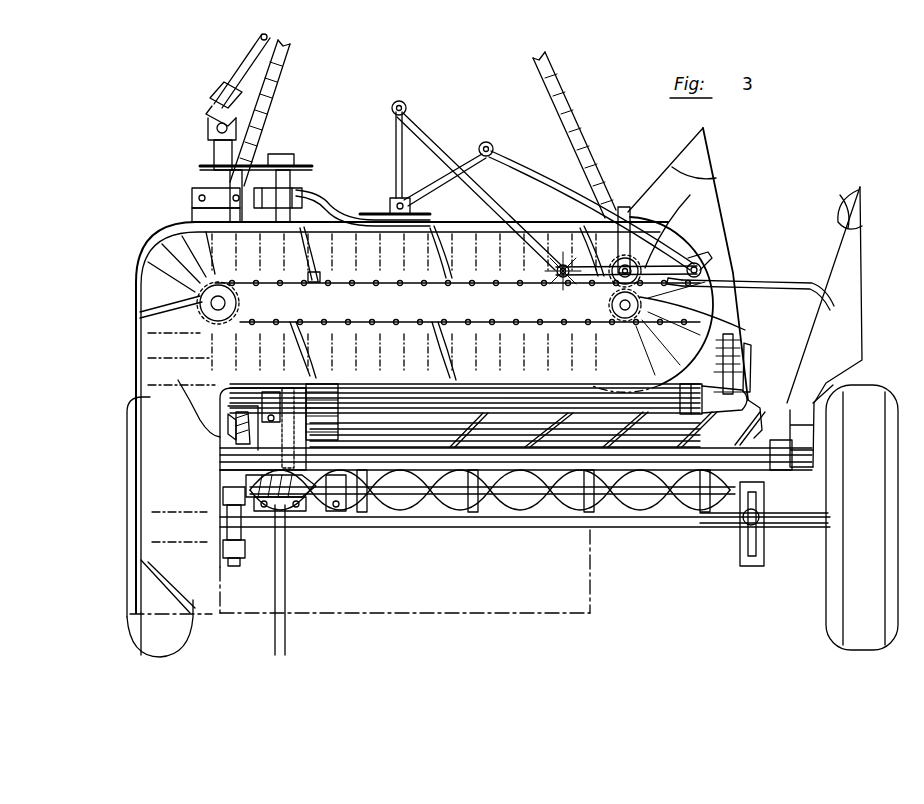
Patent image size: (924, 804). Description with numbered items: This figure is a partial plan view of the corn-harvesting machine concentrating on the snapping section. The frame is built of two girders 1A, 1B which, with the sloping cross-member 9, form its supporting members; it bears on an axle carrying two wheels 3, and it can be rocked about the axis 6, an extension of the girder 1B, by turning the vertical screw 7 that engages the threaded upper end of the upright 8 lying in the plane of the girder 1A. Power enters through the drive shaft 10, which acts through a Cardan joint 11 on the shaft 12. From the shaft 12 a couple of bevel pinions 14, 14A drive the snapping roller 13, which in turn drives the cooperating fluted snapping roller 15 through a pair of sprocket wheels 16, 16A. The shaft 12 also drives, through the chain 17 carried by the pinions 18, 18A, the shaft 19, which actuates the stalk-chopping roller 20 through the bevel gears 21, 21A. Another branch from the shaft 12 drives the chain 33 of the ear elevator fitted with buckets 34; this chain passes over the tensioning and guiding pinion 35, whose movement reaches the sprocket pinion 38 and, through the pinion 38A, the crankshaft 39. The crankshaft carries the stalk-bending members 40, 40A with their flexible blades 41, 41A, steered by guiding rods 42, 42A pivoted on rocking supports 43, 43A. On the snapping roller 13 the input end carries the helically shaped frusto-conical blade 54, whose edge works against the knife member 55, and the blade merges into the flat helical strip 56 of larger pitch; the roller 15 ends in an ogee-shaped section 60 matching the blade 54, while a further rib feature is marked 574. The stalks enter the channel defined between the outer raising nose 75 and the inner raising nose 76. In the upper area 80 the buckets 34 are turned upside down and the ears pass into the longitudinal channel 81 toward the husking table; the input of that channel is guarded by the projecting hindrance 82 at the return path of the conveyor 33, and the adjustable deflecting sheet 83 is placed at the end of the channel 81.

The girder 1A is at (586, 144).
The girder 1B is at (280, 80).
The wheels 3 is at (186, 634).
The axis 6 is at (232, 524).
The vertical screw 7 is at (742, 522).
The upright 8 is at (742, 557).
The sloping cross-member 9 is at (472, 460).
The drive shaft 10 is at (246, 52).
The Cardan joint 11 is at (212, 106).
The shaft 12 is at (200, 204).
The snapping roller 13 is at (474, 431).
The bevel pinion 14 is at (236, 424).
The bevel pinion 14A is at (236, 434).
The cooperating snapping roller 15 is at (490, 386).
The sprocket wheel 16 is at (306, 440).
The sprocket wheel 16A is at (314, 394).
The chain 17 is at (298, 163).
The pinion 18 is at (210, 163).
The pinion 18A is at (288, 154).
The shaft 19 is at (308, 206).
The stalk-chopping roller 20 is at (396, 524).
The bevel gear 21 is at (282, 512).
The bevel gear 21A is at (316, 500).
The chain of the ear conveyor 33 is at (378, 322).
The buckets 34 is at (308, 254).
The chain-tensioning and guiding pinion 35 is at (648, 322).
The sprocket pinion 38 is at (628, 321).
The pinion 38A is at (638, 250).
The crankshaft 39 is at (606, 240).
The stalk-bending member 40 is at (702, 266).
The stalk-bending member 40A is at (550, 266).
The flexible blade 41 is at (756, 291).
The flexible blade 41A is at (744, 331).
The guiding rod 42 is at (542, 168).
The guiding rod 42A is at (420, 124).
The rocking support 43 is at (468, 162).
The rocking support 43A is at (396, 158).
The helically shaped blade 54 is at (762, 430).
The knife member 55 is at (754, 392).
The flat helical strip 56 is at (614, 500).
The ogee-shaped section 60 is at (720, 392).
The tines 574 is at (464, 520).
The outer raising nose 75 is at (838, 214).
The inner raising nose 76 is at (706, 150).
The upper area 80 is at (165, 276).
The longitudinal channel 81 is at (157, 450).
The hindrance 82 is at (180, 388).
The deflecting sheet 83 is at (163, 597).